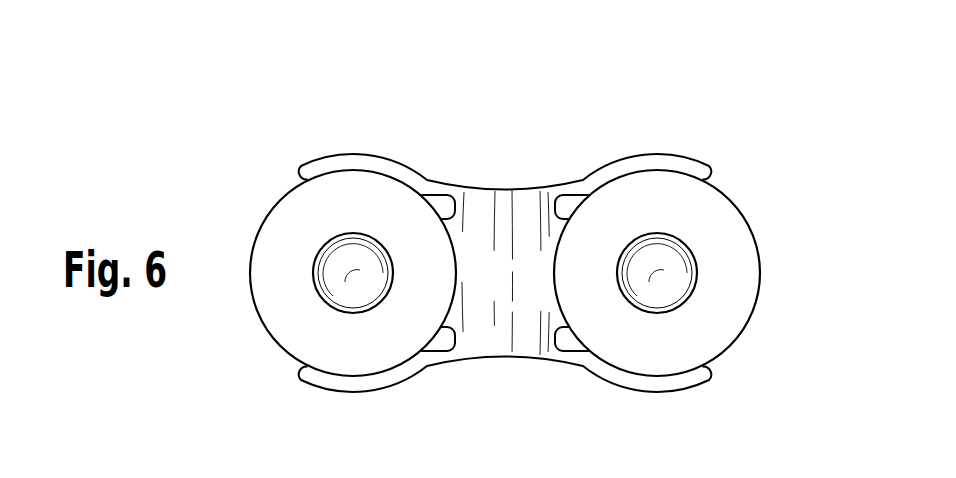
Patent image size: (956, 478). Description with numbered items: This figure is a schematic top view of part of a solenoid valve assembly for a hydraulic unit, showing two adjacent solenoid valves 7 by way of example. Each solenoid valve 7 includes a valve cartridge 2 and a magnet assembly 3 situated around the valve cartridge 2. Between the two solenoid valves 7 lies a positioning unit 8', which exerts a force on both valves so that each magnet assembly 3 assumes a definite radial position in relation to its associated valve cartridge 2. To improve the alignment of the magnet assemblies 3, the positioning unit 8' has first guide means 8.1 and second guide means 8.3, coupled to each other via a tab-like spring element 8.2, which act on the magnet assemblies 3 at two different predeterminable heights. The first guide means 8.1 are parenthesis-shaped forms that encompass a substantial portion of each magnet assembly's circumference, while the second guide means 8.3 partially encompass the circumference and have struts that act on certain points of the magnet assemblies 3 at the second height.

The solenoid valve 7 is at (219, 159).
The positioning unit 8' is at (505, 272).
The first guide means 8.1 is at (317, 167).
The tab-like spring element 8.2 is at (513, 336).
The second guide means 8.3 is at (433, 194).
The magnet assembly 3 is at (268, 253).
The valve cartridge 2 is at (340, 287).